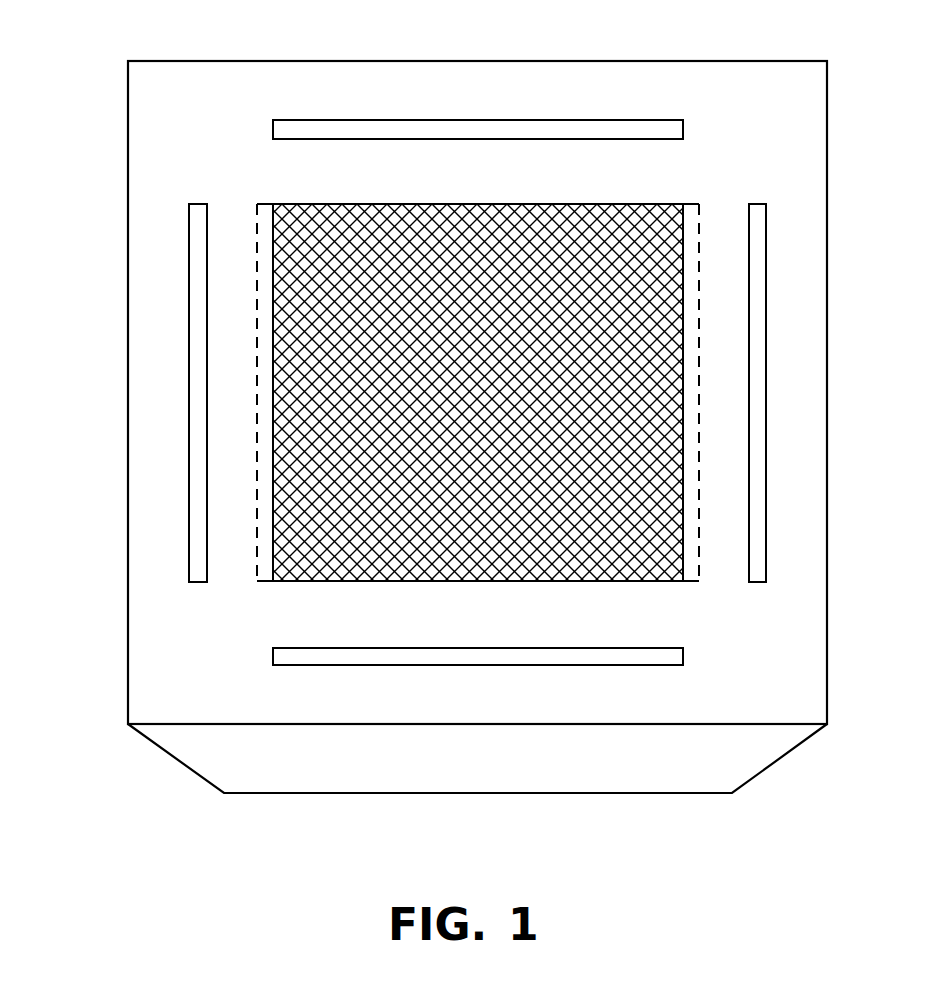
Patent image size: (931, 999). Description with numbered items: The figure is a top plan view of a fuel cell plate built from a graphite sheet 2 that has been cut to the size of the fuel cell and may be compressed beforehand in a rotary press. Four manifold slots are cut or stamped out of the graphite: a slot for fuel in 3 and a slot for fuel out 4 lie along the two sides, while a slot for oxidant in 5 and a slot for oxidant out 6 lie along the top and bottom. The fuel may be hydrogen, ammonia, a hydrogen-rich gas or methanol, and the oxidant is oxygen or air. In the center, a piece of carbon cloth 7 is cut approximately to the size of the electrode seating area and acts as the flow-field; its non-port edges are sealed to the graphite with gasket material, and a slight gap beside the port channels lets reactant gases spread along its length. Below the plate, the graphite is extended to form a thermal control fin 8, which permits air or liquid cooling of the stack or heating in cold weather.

The graphite sheet 2 is at (152, 142).
The fuel in manifold 3 is at (197, 388).
The fuel out manifold 4 is at (758, 416).
The oxidant in manifold 5 is at (507, 130).
The oxidant out manifold 6 is at (557, 660).
The carbon cloth 7 is at (683, 312).
The thermal control fin 8 is at (357, 772).